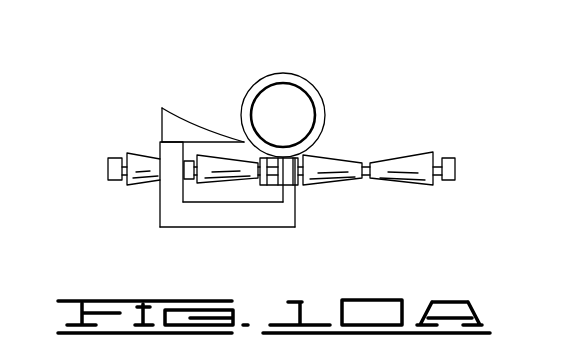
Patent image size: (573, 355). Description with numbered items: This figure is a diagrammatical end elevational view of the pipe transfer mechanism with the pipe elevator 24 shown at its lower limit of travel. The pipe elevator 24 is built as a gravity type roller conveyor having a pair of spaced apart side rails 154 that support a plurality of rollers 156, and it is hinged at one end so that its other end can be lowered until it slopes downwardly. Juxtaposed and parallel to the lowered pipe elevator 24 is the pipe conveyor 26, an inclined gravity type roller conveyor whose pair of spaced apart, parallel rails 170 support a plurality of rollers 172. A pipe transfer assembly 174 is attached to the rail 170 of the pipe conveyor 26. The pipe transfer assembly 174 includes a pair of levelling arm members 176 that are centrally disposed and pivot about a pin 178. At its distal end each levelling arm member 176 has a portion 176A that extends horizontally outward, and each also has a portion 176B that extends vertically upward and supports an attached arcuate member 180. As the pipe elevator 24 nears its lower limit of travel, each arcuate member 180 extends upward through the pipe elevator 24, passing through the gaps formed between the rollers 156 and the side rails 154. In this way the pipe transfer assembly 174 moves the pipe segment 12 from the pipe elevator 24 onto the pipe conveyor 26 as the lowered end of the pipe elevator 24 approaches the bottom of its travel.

The pipe segment 12 is at (297, 77).
The pipe elevator 24 is at (112, 187).
The pipe conveyor 26 is at (408, 148).
The side rails 154 is at (108, 166).
The rollers 156 is at (135, 155).
The rails 170 is at (455, 168).
The rollers 172 is at (335, 150).
The pipe transfer assembly 174 is at (160, 98).
The levelling arm members 176 is at (215, 201).
The horizontally extending portion 176A is at (207, 218).
The vertically extending portion 176B is at (165, 196).
The pin 178 is at (296, 208).
The arcuate member 180 is at (172, 128).